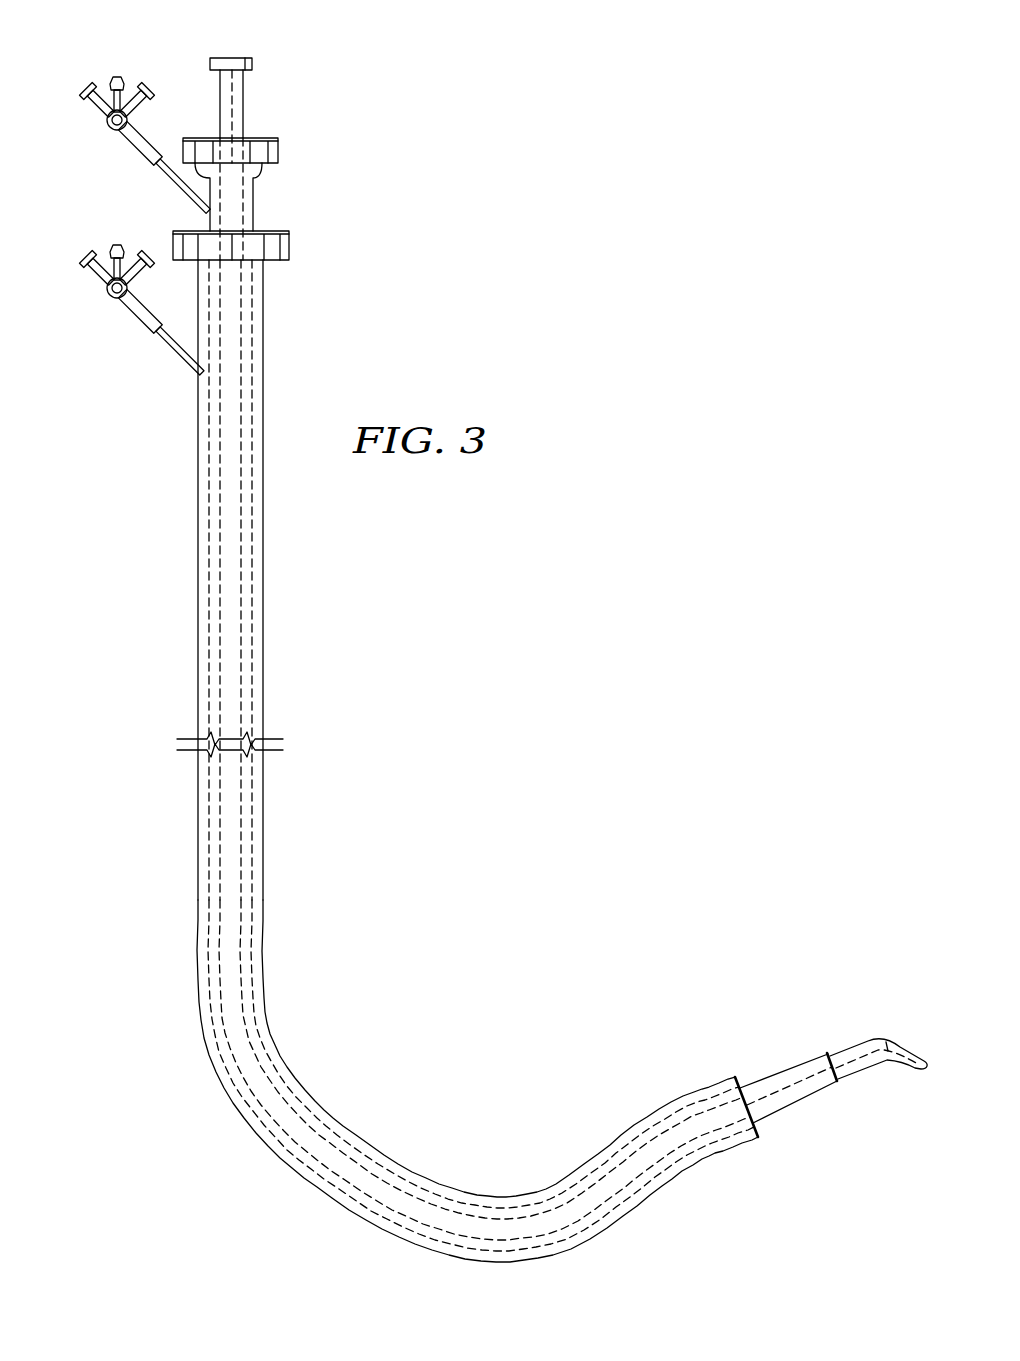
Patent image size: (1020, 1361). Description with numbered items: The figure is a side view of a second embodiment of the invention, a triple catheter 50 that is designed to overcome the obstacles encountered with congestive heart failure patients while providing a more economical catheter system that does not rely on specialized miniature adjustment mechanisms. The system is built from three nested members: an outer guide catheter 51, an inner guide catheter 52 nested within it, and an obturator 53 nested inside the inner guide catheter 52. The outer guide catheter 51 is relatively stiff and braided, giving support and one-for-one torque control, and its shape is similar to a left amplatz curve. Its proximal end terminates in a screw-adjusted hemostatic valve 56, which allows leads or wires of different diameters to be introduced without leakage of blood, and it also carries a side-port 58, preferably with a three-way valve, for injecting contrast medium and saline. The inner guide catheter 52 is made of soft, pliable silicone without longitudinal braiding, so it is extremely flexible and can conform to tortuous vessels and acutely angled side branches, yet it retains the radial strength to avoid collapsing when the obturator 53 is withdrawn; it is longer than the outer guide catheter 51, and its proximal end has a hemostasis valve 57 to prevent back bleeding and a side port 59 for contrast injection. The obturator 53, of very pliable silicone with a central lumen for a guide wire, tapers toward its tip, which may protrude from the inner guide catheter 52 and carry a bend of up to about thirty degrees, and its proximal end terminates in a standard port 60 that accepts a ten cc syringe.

The triple catheter 50 is at (166, 461).
The outer guide catheter 51 is at (265, 600).
The inner guide catheter 52 is at (254, 195).
The obturator 53 is at (245, 100).
The screw-adjusted hemostatic valve 56 is at (290, 246).
The hemostasis valve 57 is at (280, 151).
The side-port 58 is at (125, 318).
The side port 59 is at (123, 137).
The standard port 60 is at (223, 57).